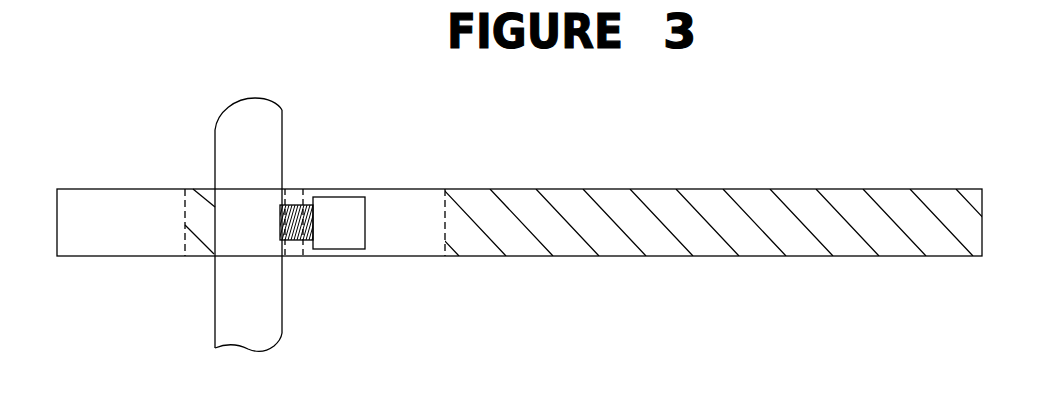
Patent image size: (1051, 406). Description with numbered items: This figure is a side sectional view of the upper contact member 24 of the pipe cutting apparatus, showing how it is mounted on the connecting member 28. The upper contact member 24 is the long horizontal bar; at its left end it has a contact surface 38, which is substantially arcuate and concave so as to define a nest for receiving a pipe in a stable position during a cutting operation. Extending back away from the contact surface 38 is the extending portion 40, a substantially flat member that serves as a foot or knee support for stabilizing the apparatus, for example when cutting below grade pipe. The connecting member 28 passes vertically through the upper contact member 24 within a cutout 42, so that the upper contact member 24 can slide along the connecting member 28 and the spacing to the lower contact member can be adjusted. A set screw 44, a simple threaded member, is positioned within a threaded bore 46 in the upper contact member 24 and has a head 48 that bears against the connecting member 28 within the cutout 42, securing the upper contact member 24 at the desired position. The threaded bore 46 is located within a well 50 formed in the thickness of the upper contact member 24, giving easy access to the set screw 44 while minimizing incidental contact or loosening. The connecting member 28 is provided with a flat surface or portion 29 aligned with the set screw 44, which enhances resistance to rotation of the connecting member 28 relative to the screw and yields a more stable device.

The upper contact member 24 is at (200, 218).
The connecting member 28 is at (261, 333).
The flat surface or portion 29 is at (283, 118).
The contact surface 38 is at (130, 243).
The extending portion 40 is at (912, 220).
The cutout 42 is at (283, 193).
The set screw 44 is at (347, 237).
The threaded bore 46 is at (297, 205).
The head 48 is at (280, 223).
The well 50 is at (403, 227).